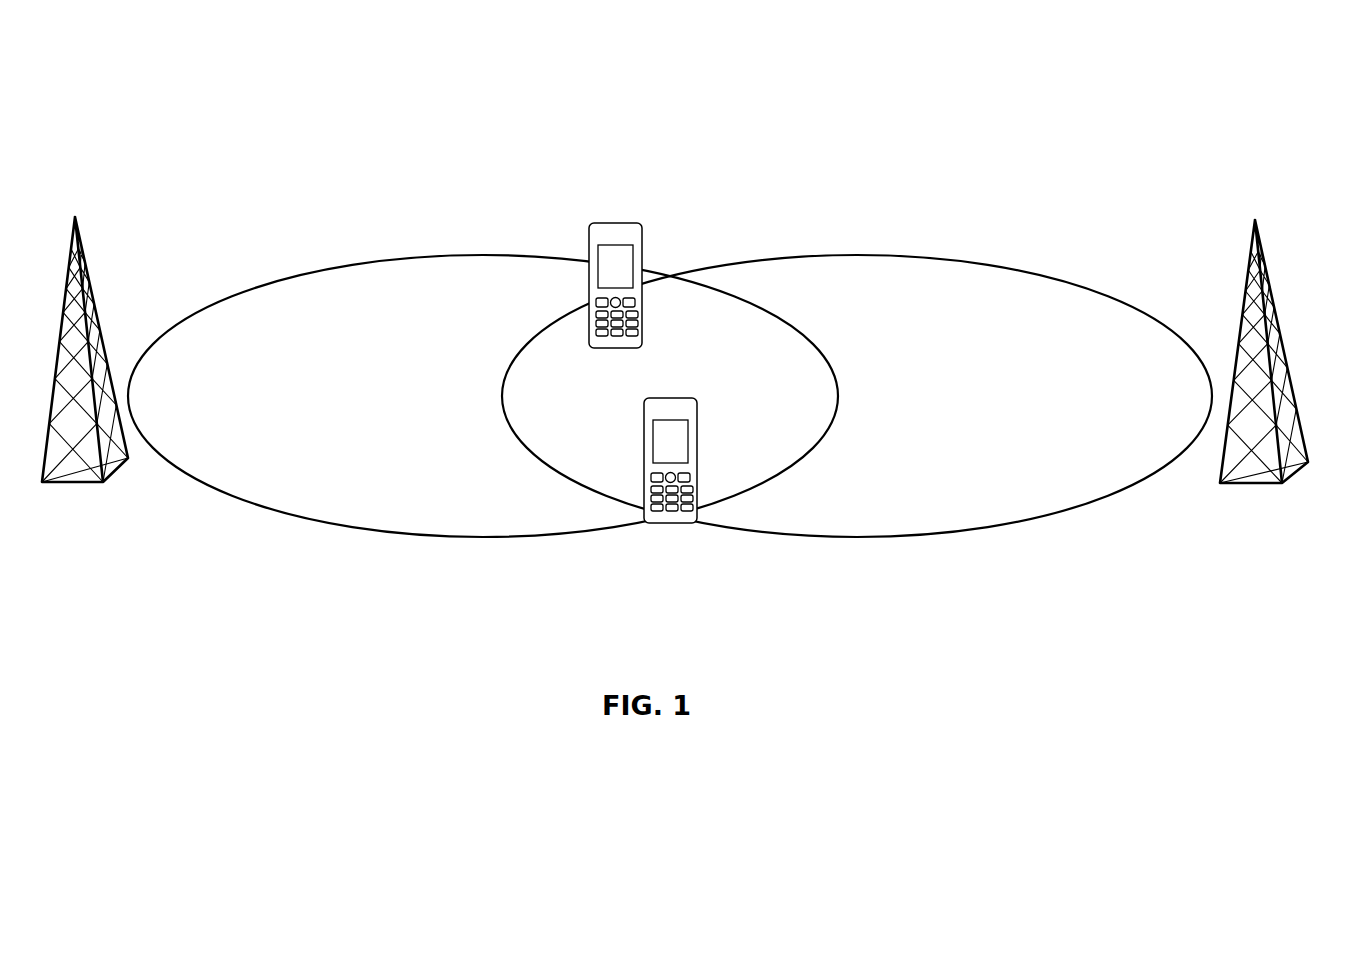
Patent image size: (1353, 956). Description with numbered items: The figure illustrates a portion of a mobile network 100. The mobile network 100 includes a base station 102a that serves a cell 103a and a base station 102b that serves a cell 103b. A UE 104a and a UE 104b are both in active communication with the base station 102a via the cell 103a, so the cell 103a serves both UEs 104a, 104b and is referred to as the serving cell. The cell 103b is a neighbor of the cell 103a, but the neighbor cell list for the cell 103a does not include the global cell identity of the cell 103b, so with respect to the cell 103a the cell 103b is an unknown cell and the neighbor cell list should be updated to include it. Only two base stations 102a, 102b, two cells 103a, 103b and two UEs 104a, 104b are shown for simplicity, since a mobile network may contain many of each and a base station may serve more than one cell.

The mobile network 100 is at (198, 110).
The base station 102a is at (107, 339).
The base station 102b is at (1285, 343).
The cell 103a is at (483, 381).
The cell 103b is at (857, 379).
The UE 104a is at (645, 271).
The UE 104b is at (701, 448).